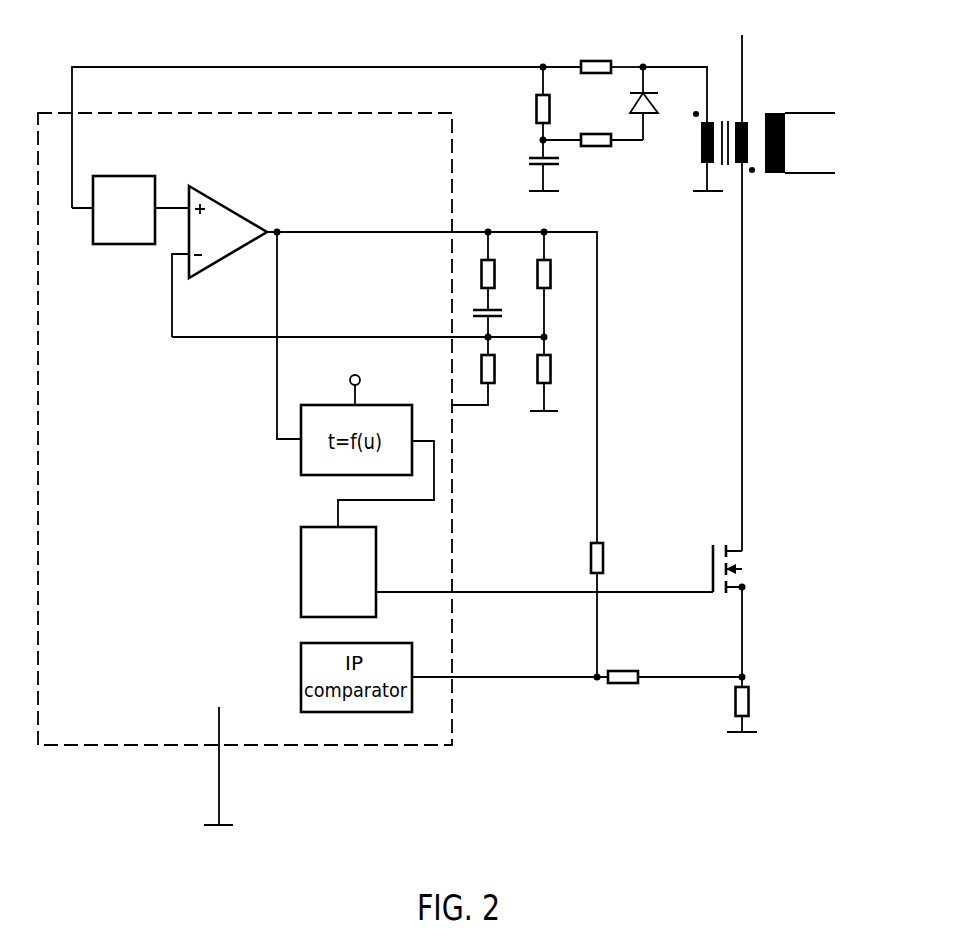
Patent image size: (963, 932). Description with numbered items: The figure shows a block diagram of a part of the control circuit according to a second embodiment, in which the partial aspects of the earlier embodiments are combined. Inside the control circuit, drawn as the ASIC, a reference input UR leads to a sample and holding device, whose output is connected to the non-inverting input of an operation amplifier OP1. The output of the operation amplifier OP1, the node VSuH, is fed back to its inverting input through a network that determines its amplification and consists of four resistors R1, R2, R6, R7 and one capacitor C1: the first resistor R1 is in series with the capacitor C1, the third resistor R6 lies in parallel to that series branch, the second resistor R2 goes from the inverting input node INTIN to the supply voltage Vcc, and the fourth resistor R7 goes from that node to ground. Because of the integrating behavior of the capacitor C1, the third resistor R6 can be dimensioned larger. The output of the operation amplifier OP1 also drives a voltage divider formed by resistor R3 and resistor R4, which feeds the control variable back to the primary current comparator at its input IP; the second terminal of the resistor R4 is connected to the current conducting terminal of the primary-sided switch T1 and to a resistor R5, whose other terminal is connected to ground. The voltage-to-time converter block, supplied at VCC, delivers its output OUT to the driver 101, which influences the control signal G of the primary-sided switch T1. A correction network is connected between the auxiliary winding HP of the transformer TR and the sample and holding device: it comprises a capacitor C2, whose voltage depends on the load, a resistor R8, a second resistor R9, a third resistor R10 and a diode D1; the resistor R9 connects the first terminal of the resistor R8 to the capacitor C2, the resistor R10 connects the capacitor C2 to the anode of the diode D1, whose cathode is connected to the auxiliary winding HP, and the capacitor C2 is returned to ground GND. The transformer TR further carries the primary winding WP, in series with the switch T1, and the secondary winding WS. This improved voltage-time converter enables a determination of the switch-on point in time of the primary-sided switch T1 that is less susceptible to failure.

The driver 101 is at (377, 533).
The application specific integrated circuit ASIC is at (245, 429).
The reference voltage input UR is at (312, 137).
The operation amplifier OP1 is at (236, 312).
The sample and hold voltage node VSuH is at (437, 372).
The integrator input node INTIN is at (358, 322).
The first resistor R1 is at (503, 269).
The second resistor R2 is at (487, 371).
The first resistor R3 is at (612, 612).
The second resistor R4 is at (671, 663).
The resistor R5 is at (752, 709).
The third resistor R6 is at (559, 285).
The fourth resistor R7 is at (555, 374).
The first resistor R8 is at (612, 53).
The second resistor R9 is at (530, 104).
The third resistor R10 is at (593, 153).
The capacitor C1 is at (502, 320).
The capacitor C2 is at (532, 165).
The diode D1 is at (630, 102).
The transformer TR is at (739, 293).
The auxiliary winding HP is at (683, 129).
The primary winding WP is at (756, 293).
The secondary winding WS is at (800, 143).
The primary-sided switch T1 is at (743, 616).
The control signal G is at (544, 607).
The primary current sense input IP is at (504, 691).
The supply voltage terminal VCC is at (356, 378).
The supply voltage Vcc is at (472, 425).
The output terminal OUT is at (395, 469).
The ground terminal GND is at (237, 766).